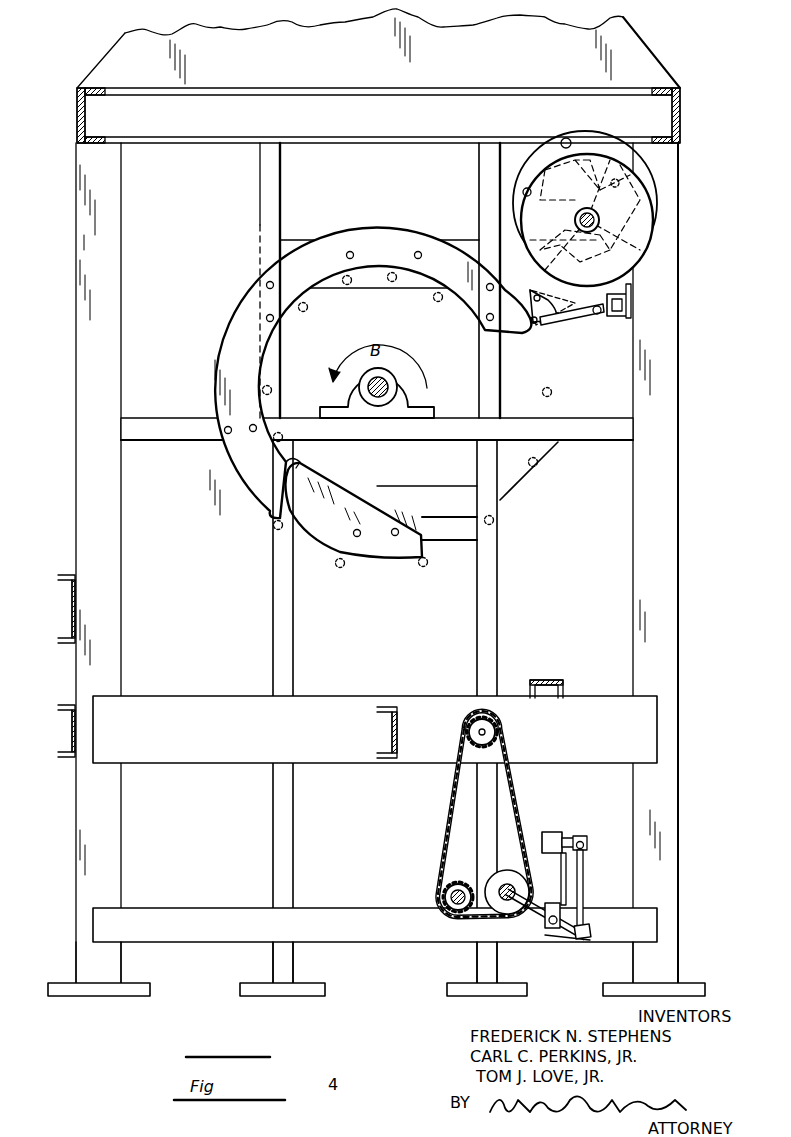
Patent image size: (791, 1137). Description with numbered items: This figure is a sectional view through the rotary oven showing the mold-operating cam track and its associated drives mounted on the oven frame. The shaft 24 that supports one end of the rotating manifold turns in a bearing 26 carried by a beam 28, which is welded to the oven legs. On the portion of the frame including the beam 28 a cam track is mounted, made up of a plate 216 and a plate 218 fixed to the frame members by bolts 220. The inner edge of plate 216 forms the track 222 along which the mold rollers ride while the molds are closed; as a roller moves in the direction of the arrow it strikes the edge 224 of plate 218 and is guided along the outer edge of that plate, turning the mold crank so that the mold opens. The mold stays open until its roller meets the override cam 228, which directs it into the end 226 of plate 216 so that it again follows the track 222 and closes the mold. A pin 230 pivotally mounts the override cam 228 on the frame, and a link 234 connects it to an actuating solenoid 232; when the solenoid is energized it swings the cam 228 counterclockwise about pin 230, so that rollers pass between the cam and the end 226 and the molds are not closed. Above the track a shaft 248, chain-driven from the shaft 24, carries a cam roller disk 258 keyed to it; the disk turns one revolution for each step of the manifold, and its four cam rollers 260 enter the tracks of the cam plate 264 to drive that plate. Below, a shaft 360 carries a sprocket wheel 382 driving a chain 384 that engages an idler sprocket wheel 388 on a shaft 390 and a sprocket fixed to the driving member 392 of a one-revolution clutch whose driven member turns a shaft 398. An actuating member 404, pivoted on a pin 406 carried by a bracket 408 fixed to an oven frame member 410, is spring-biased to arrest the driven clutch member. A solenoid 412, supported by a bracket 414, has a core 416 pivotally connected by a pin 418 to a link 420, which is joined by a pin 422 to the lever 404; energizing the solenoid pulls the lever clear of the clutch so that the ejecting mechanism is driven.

The shaft 24 is at (398, 388).
The bearing 26 is at (405, 376).
The beam 28 is at (178, 440).
The plate 216 is at (357, 373).
The plate 218 is at (362, 558).
The bolts 220 is at (350, 252).
The track 222 is at (376, 373).
The edge 224 is at (302, 462).
The end 226 is at (515, 333).
The override cam 228 is at (545, 326).
The pin 230 is at (532, 290).
The actuating solenoid 232 is at (634, 300).
The link 234 is at (584, 318).
The shaft 248 is at (600, 222).
The cam roller disk 258 is at (585, 187).
The cam rollers 260 is at (572, 143).
The cam plate 264 is at (650, 186).
The shaft 360 is at (470, 733).
The sprocket wheel 382 is at (492, 735).
The chain 384 is at (450, 823).
The sprocket wheel 388 is at (444, 888).
The shaft 390 is at (452, 915).
The driving member 392 is at (500, 878).
The shaft 398 is at (496, 902).
The actuating member 404 is at (532, 918).
The pin 406 is at (562, 942).
The bracket 408 is at (550, 932).
The oven frame member 410 is at (358, 936).
The solenoid 412 is at (550, 830).
The bracket 414 is at (568, 888).
The core 416 is at (583, 836).
The pin 418 is at (586, 847).
The link 420 is at (584, 868).
The pin 422 is at (585, 942).